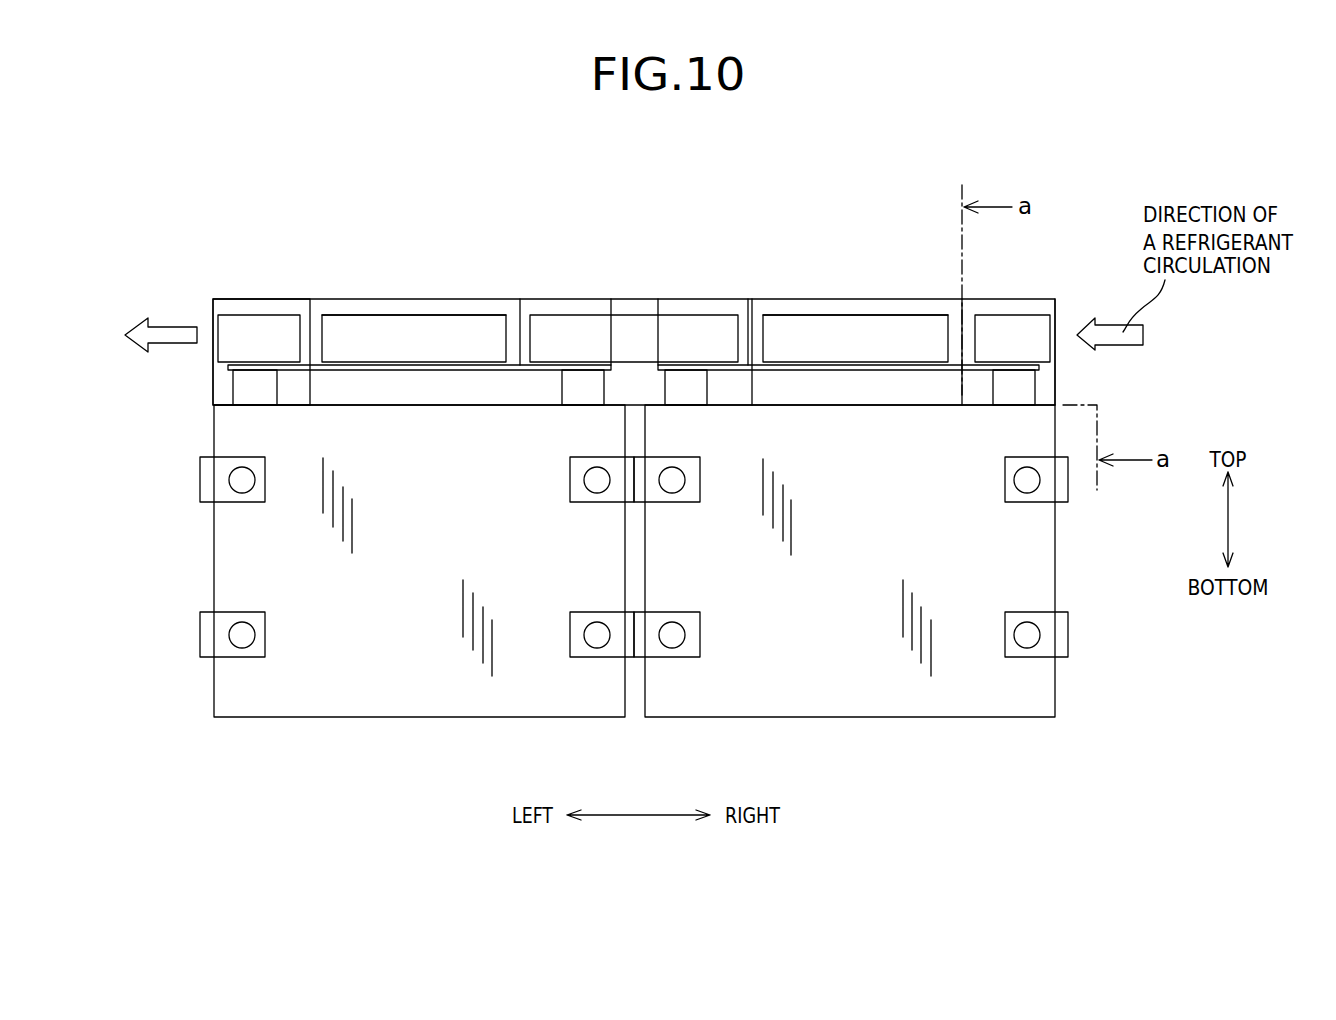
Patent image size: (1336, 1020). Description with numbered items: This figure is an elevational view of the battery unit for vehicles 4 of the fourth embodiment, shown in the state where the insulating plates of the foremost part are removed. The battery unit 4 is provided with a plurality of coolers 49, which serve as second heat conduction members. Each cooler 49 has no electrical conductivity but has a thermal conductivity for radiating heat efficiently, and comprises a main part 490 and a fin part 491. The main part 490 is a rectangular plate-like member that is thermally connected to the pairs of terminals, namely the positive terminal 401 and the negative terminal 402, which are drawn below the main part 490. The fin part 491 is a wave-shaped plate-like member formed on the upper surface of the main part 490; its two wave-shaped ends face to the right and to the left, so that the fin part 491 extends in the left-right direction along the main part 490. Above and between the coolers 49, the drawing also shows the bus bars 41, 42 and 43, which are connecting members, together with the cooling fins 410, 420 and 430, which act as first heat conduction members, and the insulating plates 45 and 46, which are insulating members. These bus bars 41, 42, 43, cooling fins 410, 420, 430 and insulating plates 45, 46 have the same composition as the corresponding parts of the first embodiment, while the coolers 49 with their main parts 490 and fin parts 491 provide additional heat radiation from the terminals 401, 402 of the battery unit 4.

The battery unit for vehicles 4 is at (661, 219).
The bus bar 41 is at (554, 323).
The cooling fin 410 is at (609, 323).
The bus bar 42 is at (990, 350).
The cooling fin 420 is at (1036, 325).
The bus bar 43 is at (235, 350).
The cooling fin 430 is at (268, 323).
The insulating plate 45 is at (762, 305).
The insulating plate 46 is at (687, 310).
The cooler 49 is at (406, 322).
The main part 490 is at (355, 366).
The fin part 491 is at (465, 322).
The positive terminal 401 is at (250, 388).
The negative terminal 402 is at (579, 388).